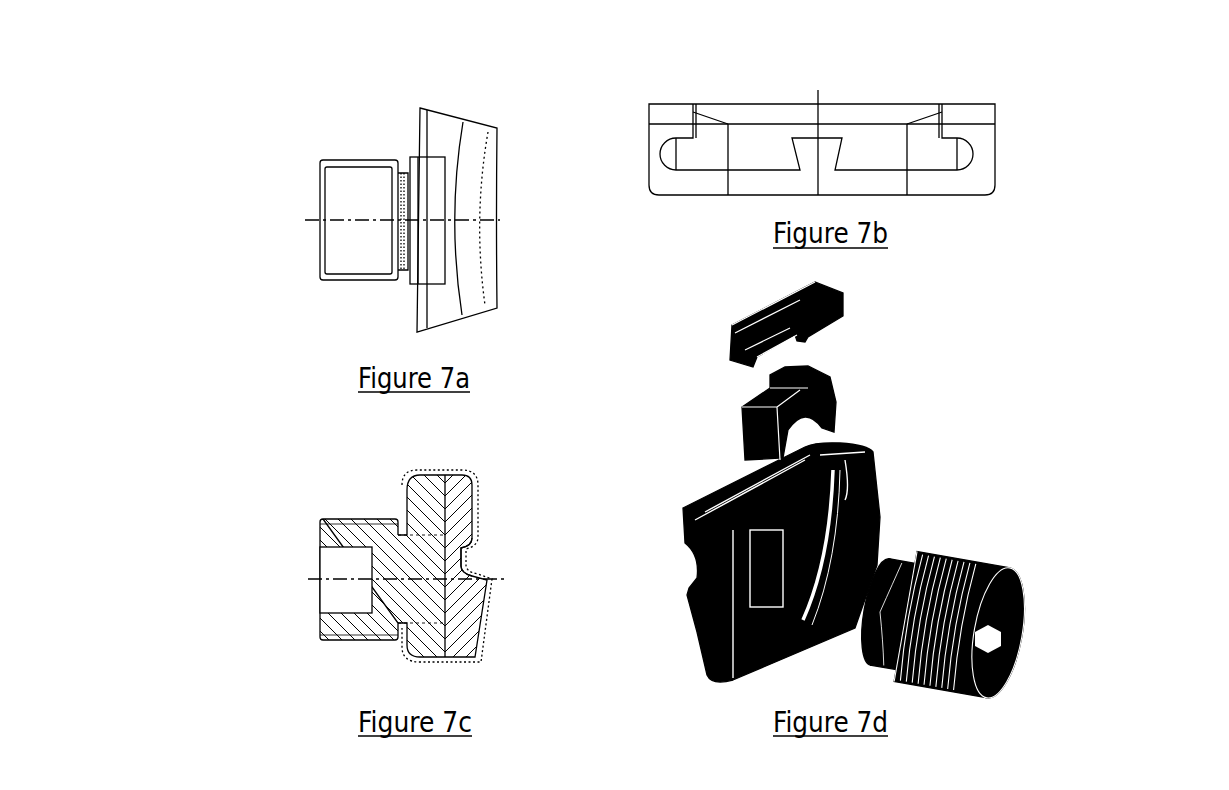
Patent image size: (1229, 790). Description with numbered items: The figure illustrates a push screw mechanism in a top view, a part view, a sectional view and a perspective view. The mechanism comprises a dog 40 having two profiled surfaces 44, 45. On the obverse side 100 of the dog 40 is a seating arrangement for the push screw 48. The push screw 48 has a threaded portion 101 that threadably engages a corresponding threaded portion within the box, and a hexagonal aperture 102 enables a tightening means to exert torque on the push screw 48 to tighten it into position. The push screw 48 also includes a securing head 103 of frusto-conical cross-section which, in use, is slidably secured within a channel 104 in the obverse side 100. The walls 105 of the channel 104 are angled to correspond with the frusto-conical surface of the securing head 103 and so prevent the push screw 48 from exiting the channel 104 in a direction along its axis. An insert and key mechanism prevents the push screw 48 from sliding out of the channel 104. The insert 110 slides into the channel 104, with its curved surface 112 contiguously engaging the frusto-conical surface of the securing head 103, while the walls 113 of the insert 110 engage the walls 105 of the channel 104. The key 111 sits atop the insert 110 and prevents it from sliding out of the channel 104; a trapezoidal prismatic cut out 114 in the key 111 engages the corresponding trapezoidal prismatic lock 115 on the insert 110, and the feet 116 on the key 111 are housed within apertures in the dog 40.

In FIG. 7A, the dog 40 is at (443, 108).
In FIG. 7D, the dog 40 is at (935, 462).
In FIG. 7C, the profiled surface 44 is at (480, 478).
In FIG. 7D, the profiled surface 44 is at (683, 508).
In FIG. 7C, the profiled surface 45 is at (487, 567).
In FIG. 7D, the profiled surface 45 is at (692, 587).
In FIG. 7D, the push screw 48 is at (1025, 608).
In FIG. 7D, the obverse side 100 is at (762, 672).
In FIG. 7D, the threaded portion 101 is at (983, 572).
In FIG. 7C, the hexagonal aperture 102 is at (343, 597).
In FIG. 7D, the hexagonal aperture 102 is at (1023, 647).
In FIG. 7C, the securing head 103 is at (418, 558).
In FIG. 7D, the securing head 103 is at (923, 555).
In FIG. 7D, the channel 104 is at (697, 627).
In FIG. 7C, the walls 105 is at (418, 503).
In FIG. 7D, the insert 110 is at (837, 385).
In FIG. 7D, the key 111 is at (850, 302).
In FIG. 7D, the curved surface 112 is at (837, 415).
In FIG. 7D, the walls 113 is at (740, 437).
In FIG. 7D, the trapezoidal prismatic cut out 114 is at (840, 322).
In FIG. 7D, the trapezoidal prismatic lock 115 is at (770, 378).
In FIG. 7D, the feet 116 is at (730, 347).